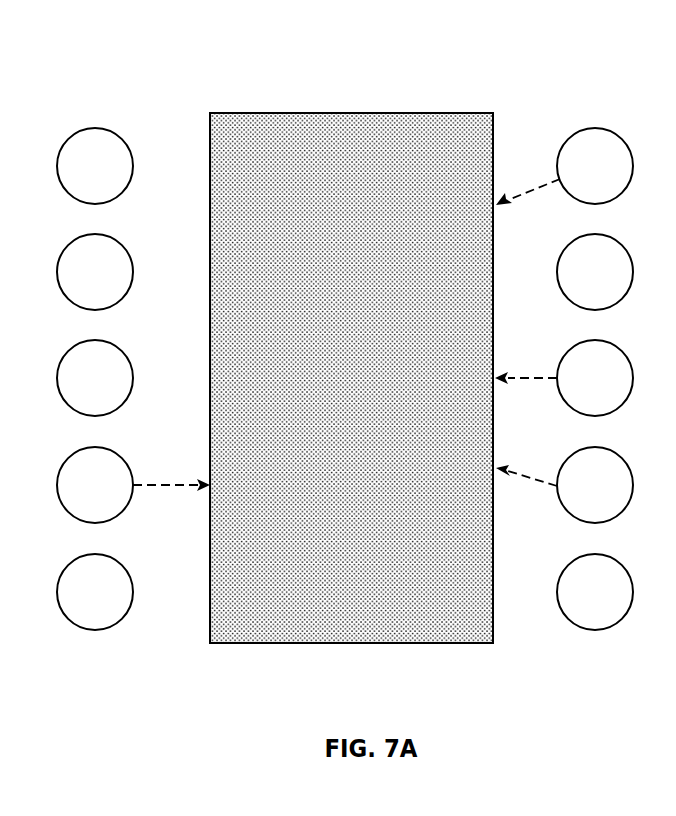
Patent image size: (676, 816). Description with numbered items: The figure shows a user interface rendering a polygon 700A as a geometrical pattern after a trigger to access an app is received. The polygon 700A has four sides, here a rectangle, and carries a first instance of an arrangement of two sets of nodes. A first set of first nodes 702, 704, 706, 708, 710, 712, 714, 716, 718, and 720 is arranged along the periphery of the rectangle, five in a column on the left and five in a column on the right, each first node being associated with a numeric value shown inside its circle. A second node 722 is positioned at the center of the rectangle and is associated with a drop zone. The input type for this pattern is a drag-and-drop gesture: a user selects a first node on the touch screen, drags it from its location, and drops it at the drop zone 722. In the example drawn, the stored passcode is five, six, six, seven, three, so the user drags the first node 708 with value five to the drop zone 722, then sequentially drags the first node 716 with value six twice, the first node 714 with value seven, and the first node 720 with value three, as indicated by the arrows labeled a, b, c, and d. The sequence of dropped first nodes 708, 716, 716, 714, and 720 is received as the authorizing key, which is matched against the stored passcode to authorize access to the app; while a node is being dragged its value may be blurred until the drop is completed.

The polygon 700A is at (222, 92).
The first node 702 is at (76, 186).
The first node 704 is at (76, 292).
The first node 706 is at (76, 398).
The first node 708 is at (76, 505).
The first node 710 is at (76, 612).
The first node 712 is at (576, 612).
The first node 714 is at (576, 505).
The first node 716 is at (576, 398).
The first node 718 is at (576, 292).
The first node 720 is at (576, 186).
The second node 722 is at (338, 388).